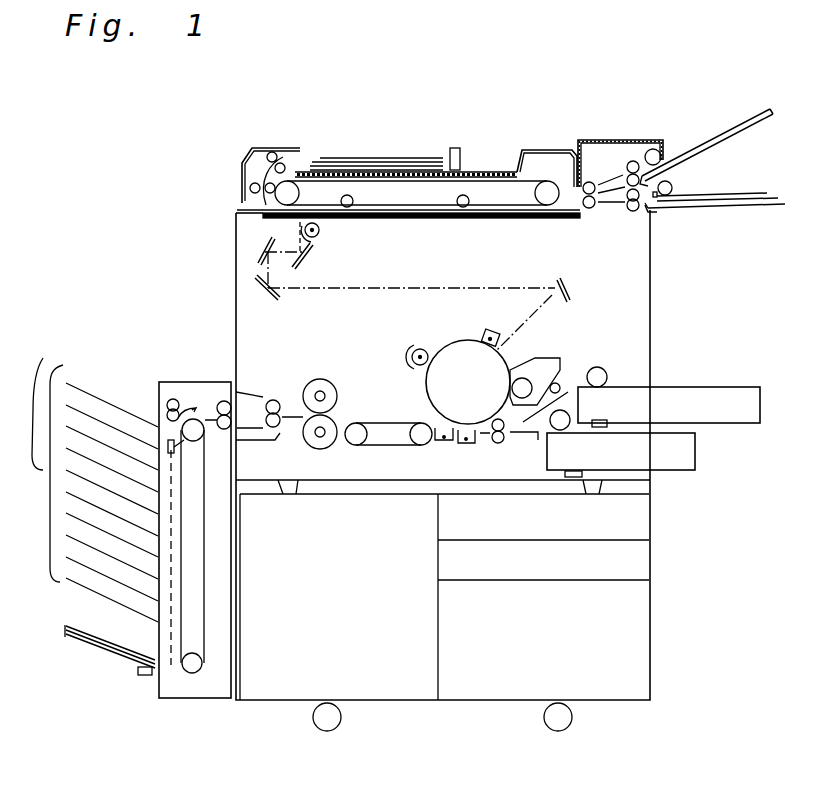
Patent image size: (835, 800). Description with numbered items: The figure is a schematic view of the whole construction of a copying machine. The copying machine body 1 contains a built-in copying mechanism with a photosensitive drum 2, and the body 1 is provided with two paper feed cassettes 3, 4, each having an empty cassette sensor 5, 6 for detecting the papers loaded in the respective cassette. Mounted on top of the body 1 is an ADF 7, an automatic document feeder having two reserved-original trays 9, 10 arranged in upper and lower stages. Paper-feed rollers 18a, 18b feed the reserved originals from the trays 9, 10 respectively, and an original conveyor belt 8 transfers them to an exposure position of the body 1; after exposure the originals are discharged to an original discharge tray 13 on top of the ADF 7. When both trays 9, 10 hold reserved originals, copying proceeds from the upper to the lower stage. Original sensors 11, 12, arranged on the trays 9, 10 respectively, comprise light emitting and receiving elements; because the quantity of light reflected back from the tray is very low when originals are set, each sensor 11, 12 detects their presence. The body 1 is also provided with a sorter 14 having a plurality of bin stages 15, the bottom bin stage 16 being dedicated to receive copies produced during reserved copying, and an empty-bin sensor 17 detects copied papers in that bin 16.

The body of a copying machine 1 is at (656, 340).
The photosensitive drum 2 is at (426, 382).
The paper feed cassette 3 is at (757, 386).
The paper feed cassette 4 is at (695, 458).
The empty cassette sensor 5 is at (607, 419).
The empty cassette sensor 6 is at (570, 478).
The ADF (automatic document feeder) 7 is at (487, 156).
The original conveyor belt 8 is at (497, 207).
The reserved-original tray 9 is at (747, 127).
The reserved-original tray 10 is at (770, 209).
The original sensor 11 is at (643, 166).
The original sensor 12 is at (657, 202).
The original discharge tray 13 is at (305, 163).
The sorter 14 is at (168, 372).
The bin stages 15 is at (95, 476).
The bottom bin stage 16 is at (65, 628).
The empty-bin sensor 17 is at (143, 676).
The paper-feed roller 18a is at (652, 150).
The paper-feed roller 18b is at (671, 186).